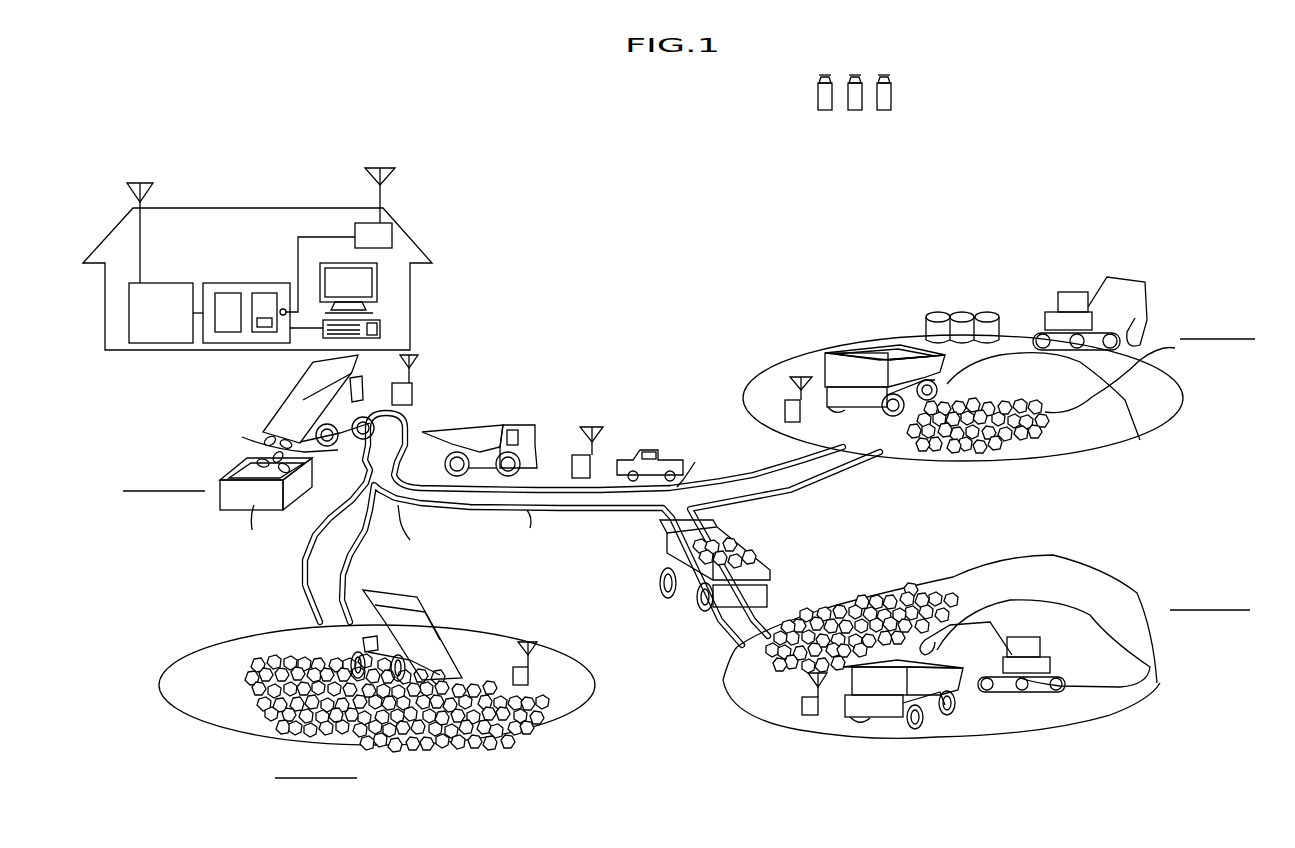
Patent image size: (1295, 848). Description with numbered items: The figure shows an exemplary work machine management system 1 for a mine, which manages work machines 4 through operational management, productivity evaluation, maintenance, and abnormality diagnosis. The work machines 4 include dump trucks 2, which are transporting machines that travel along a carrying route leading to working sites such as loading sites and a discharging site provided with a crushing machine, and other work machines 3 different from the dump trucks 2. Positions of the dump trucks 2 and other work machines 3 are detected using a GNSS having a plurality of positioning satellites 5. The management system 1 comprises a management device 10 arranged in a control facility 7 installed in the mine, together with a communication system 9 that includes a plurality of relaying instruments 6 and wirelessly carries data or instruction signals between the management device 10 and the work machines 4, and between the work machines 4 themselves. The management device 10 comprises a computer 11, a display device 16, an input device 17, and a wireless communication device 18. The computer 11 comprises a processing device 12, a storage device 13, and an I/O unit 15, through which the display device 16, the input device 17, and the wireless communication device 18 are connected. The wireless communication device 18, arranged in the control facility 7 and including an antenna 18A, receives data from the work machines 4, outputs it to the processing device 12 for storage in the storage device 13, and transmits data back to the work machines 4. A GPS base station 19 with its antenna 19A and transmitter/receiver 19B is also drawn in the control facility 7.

The work machine management system 1 is at (993, 157).
The dump truck 2 is at (303, 377).
The other work machine 3 is at (647, 452).
The work machine 4 is at (687, 502).
The positioning satellite 5 is at (825, 110).
The relaying instrument 6 is at (412, 369).
The control facility 7 is at (300, 202).
The communication system 9 is at (545, 202).
The management device 10 is at (266, 220).
The computer 11 is at (243, 275).
The processing device 12 is at (230, 292).
The storage device 13 is at (267, 292).
The I/O unit 15 is at (283, 308).
The display device 16 is at (377, 282).
The input device 17 is at (380, 328).
The wireless communication device 18 is at (367, 222).
The antenna 18A is at (382, 168).
The GPS base station 19 is at (160, 347).
The GPS base station antenna 19A is at (142, 232).
The transmitter/receiver 19B is at (162, 295).